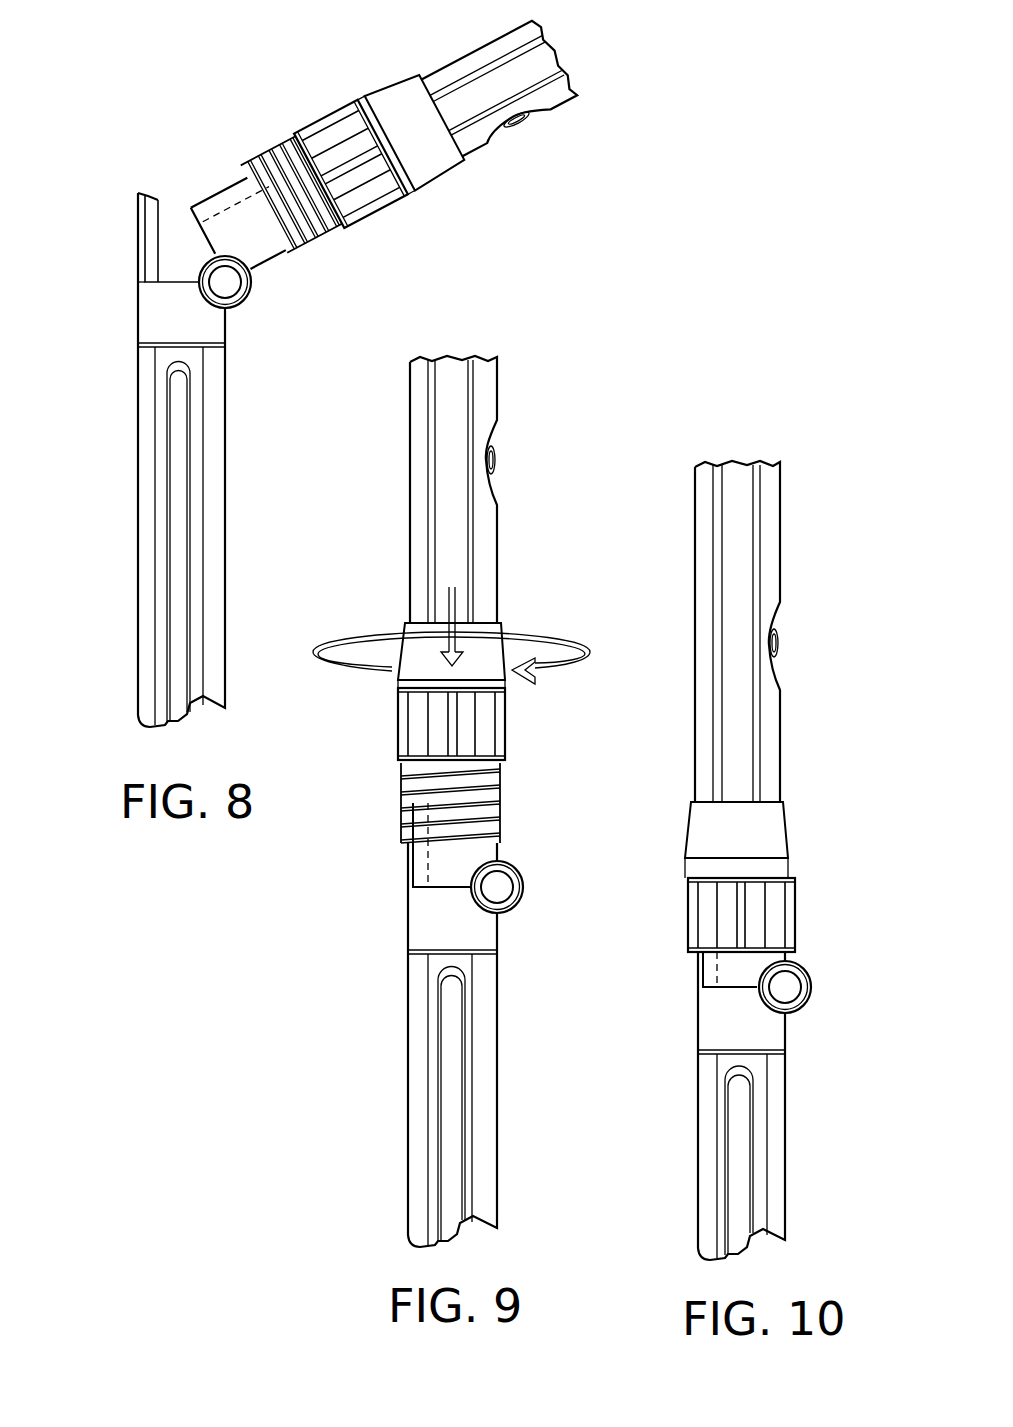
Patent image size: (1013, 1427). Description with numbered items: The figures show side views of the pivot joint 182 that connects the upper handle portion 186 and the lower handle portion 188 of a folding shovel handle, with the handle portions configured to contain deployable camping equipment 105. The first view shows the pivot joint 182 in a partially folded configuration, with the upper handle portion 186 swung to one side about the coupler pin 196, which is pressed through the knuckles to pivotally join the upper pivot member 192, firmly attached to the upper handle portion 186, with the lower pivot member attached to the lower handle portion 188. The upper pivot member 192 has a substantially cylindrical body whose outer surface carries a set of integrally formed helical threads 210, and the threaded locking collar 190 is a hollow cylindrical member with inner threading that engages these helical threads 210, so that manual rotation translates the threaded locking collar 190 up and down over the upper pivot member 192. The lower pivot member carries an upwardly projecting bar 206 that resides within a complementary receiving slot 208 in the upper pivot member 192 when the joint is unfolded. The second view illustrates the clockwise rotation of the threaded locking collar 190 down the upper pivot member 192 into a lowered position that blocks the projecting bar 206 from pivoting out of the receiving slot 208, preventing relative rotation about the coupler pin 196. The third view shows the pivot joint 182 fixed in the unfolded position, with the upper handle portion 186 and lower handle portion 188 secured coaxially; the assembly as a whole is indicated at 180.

In FIG. 8, the deployable camping equipment 105 is at (178, 546).
In FIG. 8, the pole assembly 180 is at (626, 58).
In FIG. 9, the pole assembly 180 is at (548, 378).
In FIG. 8, the pivot joint 182 is at (255, 332).
In FIG. 9, the pivot joint 182 is at (376, 920).
In FIG. 10, the pivot joint 182 is at (678, 1044).
In FIG. 8, the upper handle portion 186 is at (486, 78).
In FIG. 9, the upper handle portion 186 is at (418, 495).
In FIG. 10, the upper handle portion 186 is at (701, 511).
In FIG. 8, the lower handle portion 188 is at (138, 491).
In FIG. 9, the lower handle portion 188 is at (410, 1088).
In FIG. 10, the lower handle portion 188 is at (781, 1130).
In FIG. 8, the threaded locking collar 190 is at (427, 176).
In FIG. 9, the threaded locking collar 190 is at (505, 731).
In FIG. 10, the threaded locking collar 190 is at (790, 912).
In FIG. 8, the upper pivot member 192 is at (324, 178).
In FIG. 9, the upper pivot member 192 is at (522, 816).
In FIG. 10, the upper pivot member 192 is at (750, 963).
In FIG. 8, the coupler pin 196 is at (230, 282).
In FIG. 9, the coupler pin 196 is at (501, 891).
In FIG. 10, the coupler pin 196 is at (788, 989).
In FIG. 8, the projecting bar 206 is at (139, 191).
In FIG. 9, the projecting bar 206 is at (409, 866).
In FIG. 10, the projecting bar 206 is at (698, 969).
In FIG. 10, the receiving slot 208 is at (700, 958).
In FIG. 8, the helical threads 210 is at (291, 194).
In FIG. 9, the helical threads 210 is at (500, 788).